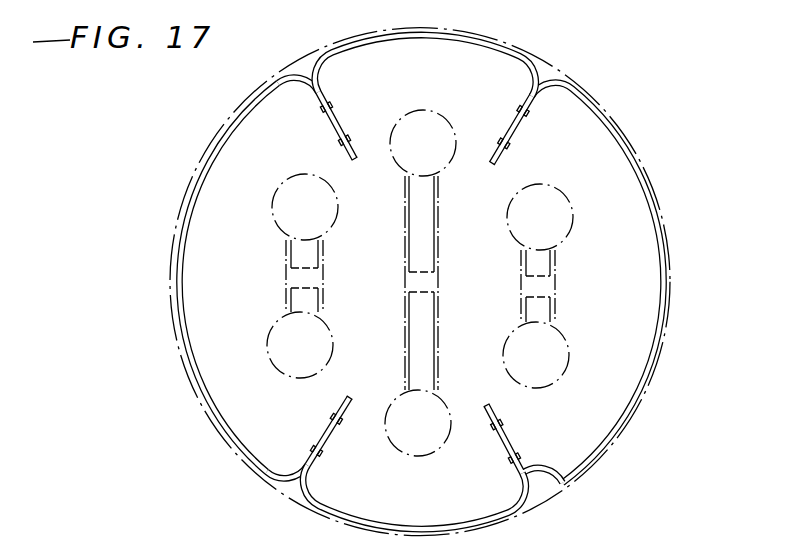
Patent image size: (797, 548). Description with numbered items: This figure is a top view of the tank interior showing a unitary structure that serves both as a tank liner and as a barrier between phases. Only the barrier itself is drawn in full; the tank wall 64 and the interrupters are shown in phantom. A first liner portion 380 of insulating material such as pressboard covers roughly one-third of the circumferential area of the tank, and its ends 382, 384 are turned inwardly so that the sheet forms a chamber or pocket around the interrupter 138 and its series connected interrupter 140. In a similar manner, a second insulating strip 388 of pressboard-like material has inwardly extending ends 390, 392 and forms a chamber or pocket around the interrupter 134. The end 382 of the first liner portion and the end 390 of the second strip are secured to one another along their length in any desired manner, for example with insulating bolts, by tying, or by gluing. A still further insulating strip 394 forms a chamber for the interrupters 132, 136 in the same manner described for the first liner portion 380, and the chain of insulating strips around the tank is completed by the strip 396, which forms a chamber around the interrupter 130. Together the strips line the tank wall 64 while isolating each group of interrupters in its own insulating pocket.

The tank wall 64 is at (173, 337).
The interrupter 130 is at (441, 156).
The interrupter 132 is at (558, 230).
The interrupter 134 is at (436, 436).
The interrupter 136 is at (554, 368).
The interrupter 138 is at (323, 220).
The interrupter 140 is at (318, 358).
The first liner portion 380 is at (183, 273).
The end 382 is at (327, 428).
The end 384 is at (333, 128).
The second insulating strip 388 is at (457, 522).
The end 390 is at (324, 443).
The end 392 is at (499, 442).
The insulating strip 394 is at (658, 289).
The insulating strip 396 is at (402, 40).